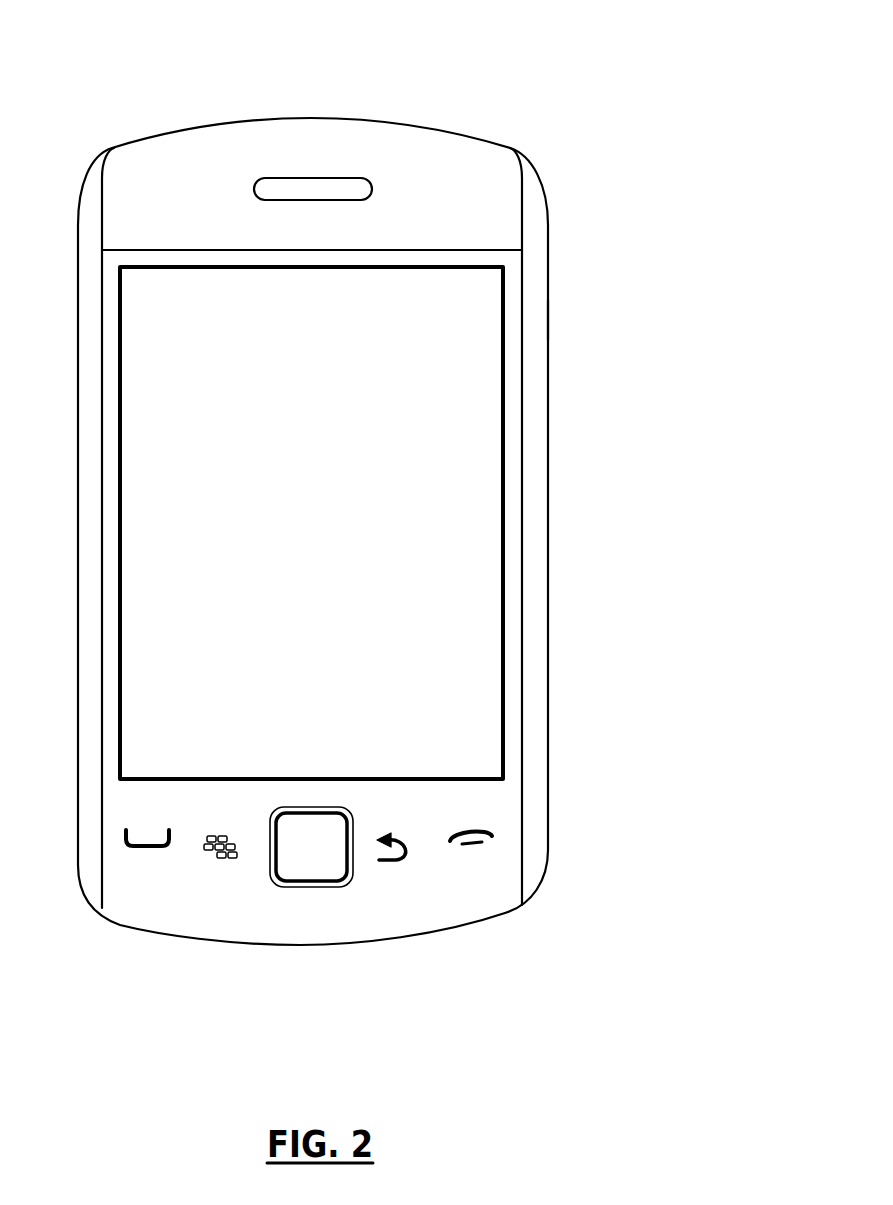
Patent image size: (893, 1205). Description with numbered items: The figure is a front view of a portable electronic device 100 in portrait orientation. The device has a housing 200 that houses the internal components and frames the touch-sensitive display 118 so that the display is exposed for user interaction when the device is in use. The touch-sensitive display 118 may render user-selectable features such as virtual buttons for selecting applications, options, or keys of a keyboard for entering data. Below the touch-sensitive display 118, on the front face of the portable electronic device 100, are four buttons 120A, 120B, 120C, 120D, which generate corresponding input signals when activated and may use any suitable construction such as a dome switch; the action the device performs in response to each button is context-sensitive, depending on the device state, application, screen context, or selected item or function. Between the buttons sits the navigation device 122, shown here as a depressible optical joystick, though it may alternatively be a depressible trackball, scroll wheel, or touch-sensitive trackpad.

The portable electronic device 100 is at (554, 92).
The housing 200 is at (534, 319).
The touch-sensitive display 118 is at (455, 559).
The button 120A is at (147, 848).
The button 120B is at (217, 862).
The button 120C is at (400, 863).
The button 120D is at (478, 850).
The navigation device 122 is at (310, 887).